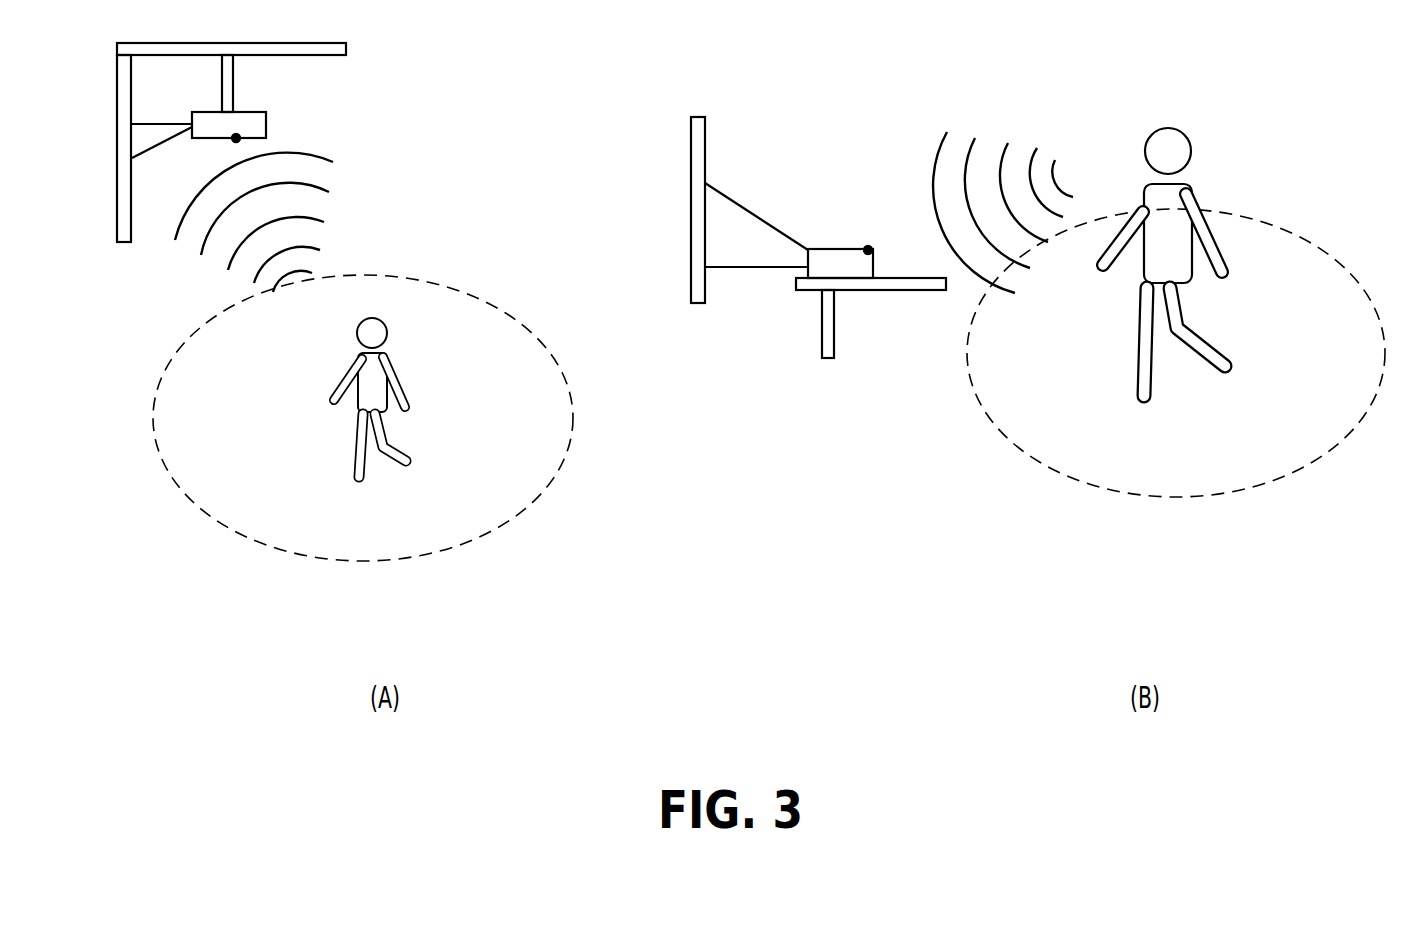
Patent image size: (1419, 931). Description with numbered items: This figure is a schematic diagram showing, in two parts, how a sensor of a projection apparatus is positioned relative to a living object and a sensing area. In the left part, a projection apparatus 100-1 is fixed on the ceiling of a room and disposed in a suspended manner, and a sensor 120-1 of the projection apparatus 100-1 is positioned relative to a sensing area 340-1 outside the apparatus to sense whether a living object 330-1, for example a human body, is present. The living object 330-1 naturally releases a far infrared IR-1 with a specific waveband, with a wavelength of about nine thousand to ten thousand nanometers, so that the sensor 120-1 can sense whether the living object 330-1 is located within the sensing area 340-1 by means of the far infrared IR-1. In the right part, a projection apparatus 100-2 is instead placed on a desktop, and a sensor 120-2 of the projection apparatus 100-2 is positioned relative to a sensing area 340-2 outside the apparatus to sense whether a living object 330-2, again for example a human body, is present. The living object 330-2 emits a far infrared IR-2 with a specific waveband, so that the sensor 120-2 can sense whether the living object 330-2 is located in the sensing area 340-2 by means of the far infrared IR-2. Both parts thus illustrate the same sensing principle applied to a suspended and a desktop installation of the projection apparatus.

The projection apparatus 100-1 is at (252, 112).
The sensor 120-1 is at (239, 141).
The far infrared IR-1 is at (307, 219).
The living object 330-1 is at (355, 416).
The sensing area 340-1 is at (252, 542).
The projection apparatus 100-2 is at (822, 257).
The sensor 120-2 is at (868, 248).
The far infrared IR-2 is at (1045, 160).
The living object 330-2 is at (1132, 292).
The sensing area 340-2 is at (993, 425).